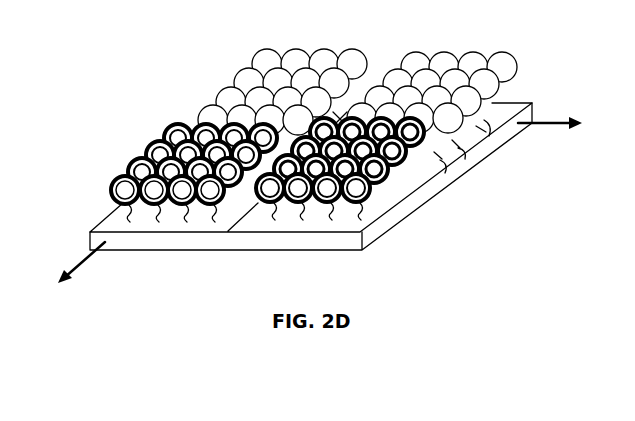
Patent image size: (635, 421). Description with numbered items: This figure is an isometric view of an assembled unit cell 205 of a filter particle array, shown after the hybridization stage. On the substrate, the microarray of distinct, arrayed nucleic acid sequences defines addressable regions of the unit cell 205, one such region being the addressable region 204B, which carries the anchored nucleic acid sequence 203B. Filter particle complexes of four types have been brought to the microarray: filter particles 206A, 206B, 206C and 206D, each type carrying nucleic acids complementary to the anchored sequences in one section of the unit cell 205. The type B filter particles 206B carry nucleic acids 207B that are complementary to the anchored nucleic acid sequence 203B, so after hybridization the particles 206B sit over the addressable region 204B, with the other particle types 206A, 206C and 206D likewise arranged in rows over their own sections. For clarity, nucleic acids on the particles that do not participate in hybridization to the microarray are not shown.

The unit cell 205 is at (358, 264).
The filter particle 206A is at (270, 60).
The filter particle 206B is at (515, 82).
The filter particle 206C is at (146, 152).
The filter particle 206D is at (380, 202).
The nucleic acid sequence 203B is at (444, 170).
The addressable region 204B is at (492, 130).
The nucleic acid 207B is at (464, 158).